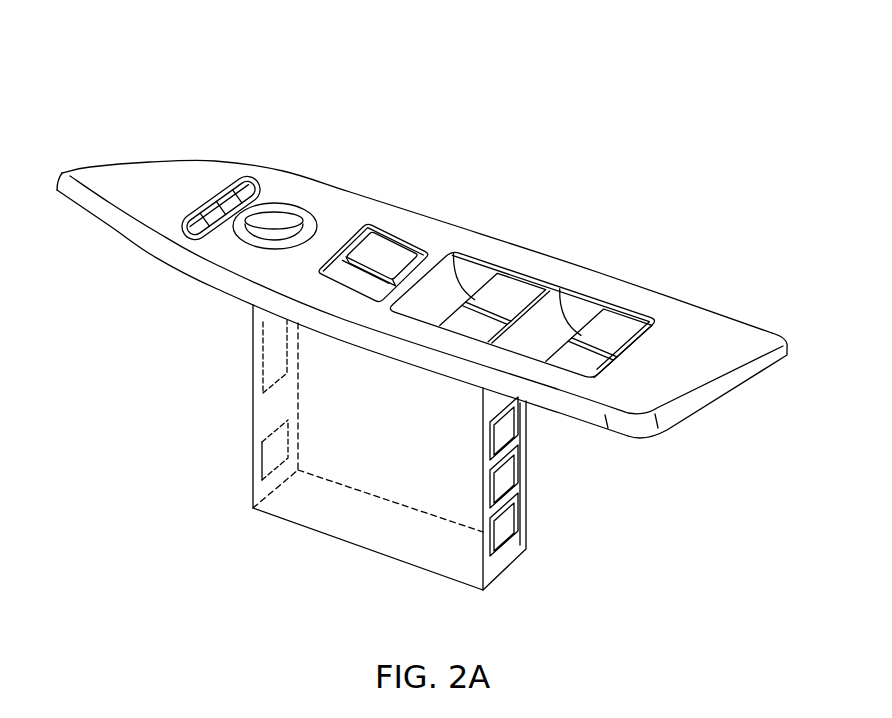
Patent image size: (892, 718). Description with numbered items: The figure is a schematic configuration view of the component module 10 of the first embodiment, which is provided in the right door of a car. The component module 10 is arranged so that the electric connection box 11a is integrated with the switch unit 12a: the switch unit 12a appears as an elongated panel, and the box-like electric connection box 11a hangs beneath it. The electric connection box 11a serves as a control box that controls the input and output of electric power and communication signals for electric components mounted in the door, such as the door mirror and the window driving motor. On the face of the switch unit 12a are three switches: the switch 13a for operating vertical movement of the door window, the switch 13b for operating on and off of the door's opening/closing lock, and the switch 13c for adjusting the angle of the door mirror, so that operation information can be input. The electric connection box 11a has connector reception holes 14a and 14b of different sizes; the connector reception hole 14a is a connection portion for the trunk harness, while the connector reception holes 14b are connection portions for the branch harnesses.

The component module 10 is at (157, 123).
The electric connection box 11a is at (293, 526).
The switch unit 12a is at (715, 316).
The switch 13a is at (517, 290).
The switch 13b is at (398, 248).
The switch 13c is at (277, 212).
The connector reception hole 14a is at (253, 361).
The connector reception holes 14b is at (253, 453).